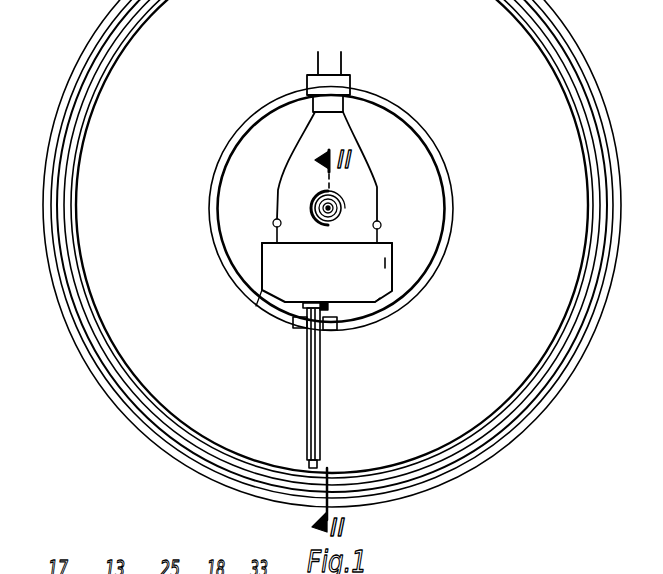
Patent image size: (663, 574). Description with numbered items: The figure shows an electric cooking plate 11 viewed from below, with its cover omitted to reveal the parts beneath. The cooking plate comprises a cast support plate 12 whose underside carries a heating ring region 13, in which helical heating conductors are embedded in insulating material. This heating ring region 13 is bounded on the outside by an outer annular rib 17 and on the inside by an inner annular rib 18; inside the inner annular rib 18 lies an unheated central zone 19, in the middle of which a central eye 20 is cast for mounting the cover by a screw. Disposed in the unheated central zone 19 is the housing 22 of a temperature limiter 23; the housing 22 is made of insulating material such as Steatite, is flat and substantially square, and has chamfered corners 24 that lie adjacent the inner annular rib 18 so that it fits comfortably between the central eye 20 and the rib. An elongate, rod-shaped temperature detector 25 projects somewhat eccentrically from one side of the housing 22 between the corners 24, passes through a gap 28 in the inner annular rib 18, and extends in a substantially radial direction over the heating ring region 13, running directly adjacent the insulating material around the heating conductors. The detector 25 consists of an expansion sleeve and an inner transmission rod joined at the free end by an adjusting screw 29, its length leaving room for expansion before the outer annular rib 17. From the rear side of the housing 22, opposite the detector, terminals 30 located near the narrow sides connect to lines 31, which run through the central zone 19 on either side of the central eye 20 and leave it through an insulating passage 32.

The electric cooking plate 11 is at (122, 432).
The support plate 12 is at (488, 453).
The heating ring region 13 is at (148, 380).
The outer annular rib 17 is at (175, 427).
The inner annular rib 18 is at (219, 268).
The unheated central zone 19 is at (238, 175).
The central eye 20 is at (348, 203).
The housing 22 is at (385, 262).
The temperature limiter 23 is at (406, 249).
The chamfered corners 24 is at (257, 308).
The temperature detector 25 is at (320, 393).
The gap 28 is at (303, 330).
The adjusting screw 29 is at (333, 307).
The terminals 30 is at (272, 230).
The lines 31 is at (353, 138).
The insulating passage 32 is at (350, 84).